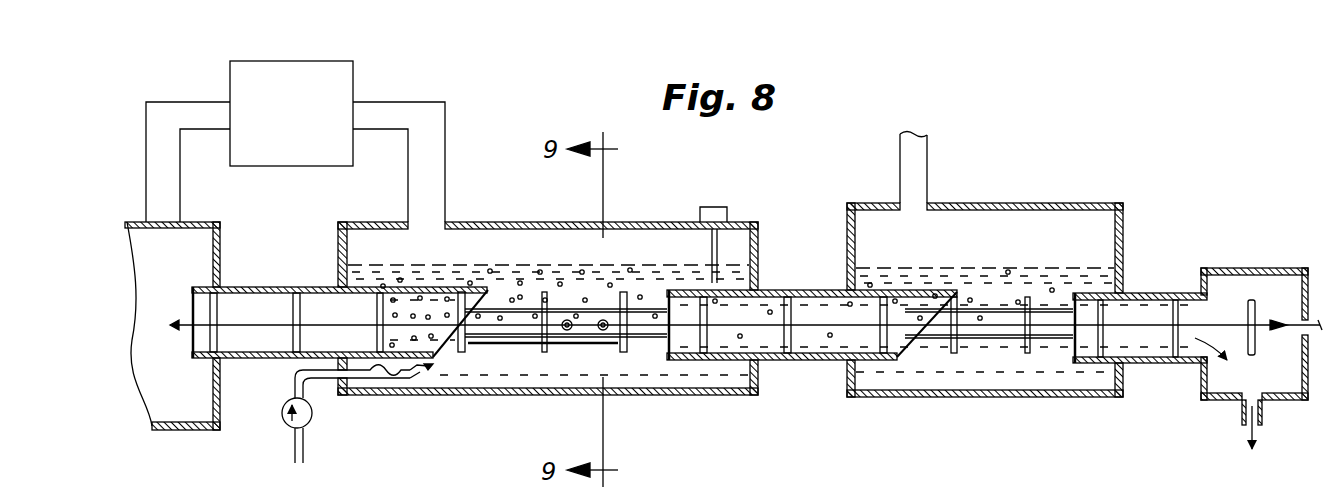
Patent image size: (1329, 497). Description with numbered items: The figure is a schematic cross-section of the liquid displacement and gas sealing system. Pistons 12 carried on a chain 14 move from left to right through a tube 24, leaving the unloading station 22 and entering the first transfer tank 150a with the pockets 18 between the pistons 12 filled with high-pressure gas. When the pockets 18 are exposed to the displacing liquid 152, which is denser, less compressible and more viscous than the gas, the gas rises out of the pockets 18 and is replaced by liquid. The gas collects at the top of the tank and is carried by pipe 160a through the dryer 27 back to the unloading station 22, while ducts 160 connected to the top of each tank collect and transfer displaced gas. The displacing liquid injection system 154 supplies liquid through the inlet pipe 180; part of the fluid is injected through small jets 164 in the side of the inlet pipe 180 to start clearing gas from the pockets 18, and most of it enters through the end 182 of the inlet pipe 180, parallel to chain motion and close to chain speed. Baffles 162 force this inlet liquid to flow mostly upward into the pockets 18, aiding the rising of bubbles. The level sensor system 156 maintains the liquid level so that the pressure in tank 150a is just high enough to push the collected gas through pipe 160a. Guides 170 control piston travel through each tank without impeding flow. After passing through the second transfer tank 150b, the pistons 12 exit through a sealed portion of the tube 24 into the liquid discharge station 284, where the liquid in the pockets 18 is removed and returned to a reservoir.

The pistons 12 is at (628, 350).
The chain 14 is at (277, 326).
The pockets 18 is at (500, 330).
The unloading station 22 is at (178, 276).
The tube 24 is at (283, 288).
The dryer 27 is at (304, 140).
The first transfer tank 150a is at (665, 222).
The second transfer tank 150b is at (1045, 200).
The displacing liquid 152 is at (578, 265).
The displacing liquid injection system 154 is at (312, 424).
The level sensor system 156 is at (717, 251).
The ducts 160 is at (905, 168).
The pipe 160a is at (445, 134).
The baffles 162 is at (533, 347).
The jets 164 is at (603, 331).
The guides 170 is at (518, 308).
The inlet pipe 180 is at (328, 378).
The end of inlet pipe 182 is at (418, 381).
The liquid discharge station 284 is at (1278, 268).